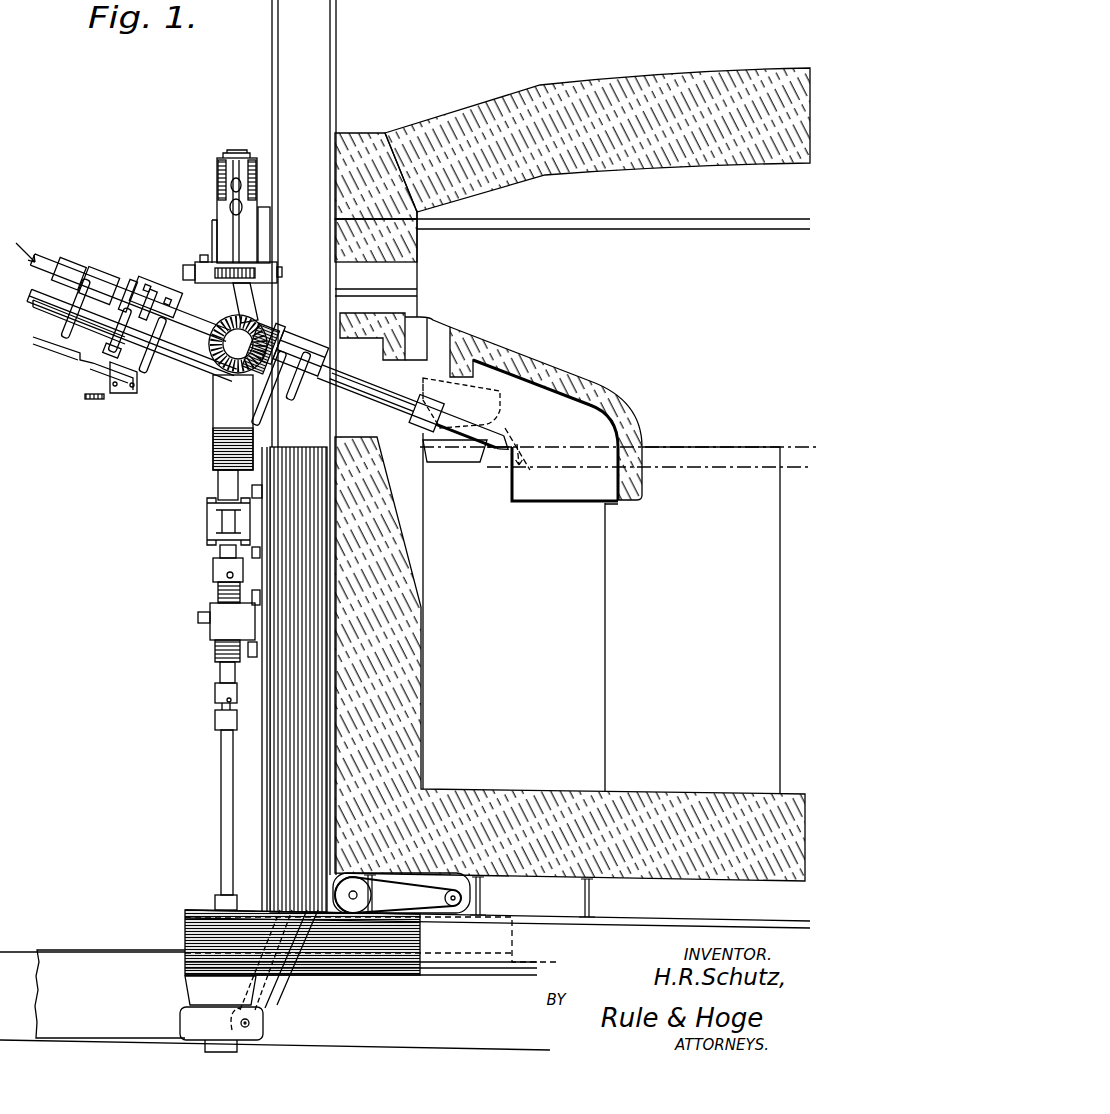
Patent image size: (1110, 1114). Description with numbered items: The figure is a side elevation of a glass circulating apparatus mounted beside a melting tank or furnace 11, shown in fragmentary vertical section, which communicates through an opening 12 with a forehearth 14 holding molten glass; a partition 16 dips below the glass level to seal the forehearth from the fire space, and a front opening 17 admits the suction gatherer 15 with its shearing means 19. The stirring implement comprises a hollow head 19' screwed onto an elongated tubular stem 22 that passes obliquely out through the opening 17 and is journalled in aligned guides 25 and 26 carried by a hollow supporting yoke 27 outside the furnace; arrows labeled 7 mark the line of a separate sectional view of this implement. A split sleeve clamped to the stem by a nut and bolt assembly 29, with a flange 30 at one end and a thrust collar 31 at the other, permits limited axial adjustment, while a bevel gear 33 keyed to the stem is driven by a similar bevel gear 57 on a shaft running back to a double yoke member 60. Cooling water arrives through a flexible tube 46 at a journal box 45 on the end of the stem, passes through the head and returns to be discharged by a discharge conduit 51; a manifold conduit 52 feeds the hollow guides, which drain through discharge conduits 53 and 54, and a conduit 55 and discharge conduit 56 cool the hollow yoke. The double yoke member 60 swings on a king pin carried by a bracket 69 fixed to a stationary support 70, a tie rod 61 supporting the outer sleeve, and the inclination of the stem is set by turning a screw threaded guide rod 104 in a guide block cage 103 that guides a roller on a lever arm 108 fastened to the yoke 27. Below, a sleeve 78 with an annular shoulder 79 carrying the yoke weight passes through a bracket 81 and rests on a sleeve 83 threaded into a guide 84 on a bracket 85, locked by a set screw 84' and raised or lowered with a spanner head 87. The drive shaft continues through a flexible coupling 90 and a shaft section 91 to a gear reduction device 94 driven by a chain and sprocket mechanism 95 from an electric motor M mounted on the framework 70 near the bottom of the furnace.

The section line 7 is at (269, 348).
The melting tank or furnace 11 is at (692, 552).
The opening 12 is at (501, 494).
The forehearth 14 is at (572, 413).
The suction gatherer 15 is at (97, 366).
The partition 16 is at (622, 404).
The opening 17 is at (340, 432).
The shearing means 19 is at (100, 428).
The hollow head 19' is at (482, 430).
The tubular stem 22 is at (152, 368).
The guide 25 is at (138, 388).
The guide 26 is at (293, 348).
The hollow supporting yoke 27 is at (252, 325).
The clamping nut and bolt assembly 29 is at (140, 282).
The flange 30 is at (129, 293).
The thrust collar 31 is at (172, 310).
The bevel gear 33 is at (280, 334).
The journal box 45 is at (86, 261).
The flexible tube 46 is at (50, 268).
The discharge conduit 51 is at (85, 332).
The manifold conduit 52 is at (175, 345).
The discharge conduit 53 is at (135, 352).
The discharge conduit 54 is at (290, 396).
The conduit 55 is at (95, 335).
The discharge conduit 56 is at (272, 432).
The bevel gear 57 is at (285, 329).
The double yoke member 60 is at (215, 180).
The tie rod 61 is at (232, 218).
The bracket or support 69 is at (266, 242).
The stationary support 70 is at (264, 73).
The sleeve 78 is at (218, 486).
The annular shoulder 79 is at (215, 470).
The bracket 81 is at (210, 518).
The sleeve 83 is at (218, 592).
The guide 84 is at (214, 629).
The set screw 84' is at (181, 616).
The bracket 85 is at (250, 656).
The spanner head 87 is at (213, 573).
The flexible coupling 90 is at (215, 705).
The shaft section 91 is at (222, 778).
The gear reduction device 94 is at (203, 990).
The chain and sprocket mechanism 95 is at (285, 991).
The guide block cage 103 is at (204, 258).
The screw threaded guide rod 104 is at (192, 266).
The lever arm 108 is at (279, 278).
The electric motor M is at (485, 900).